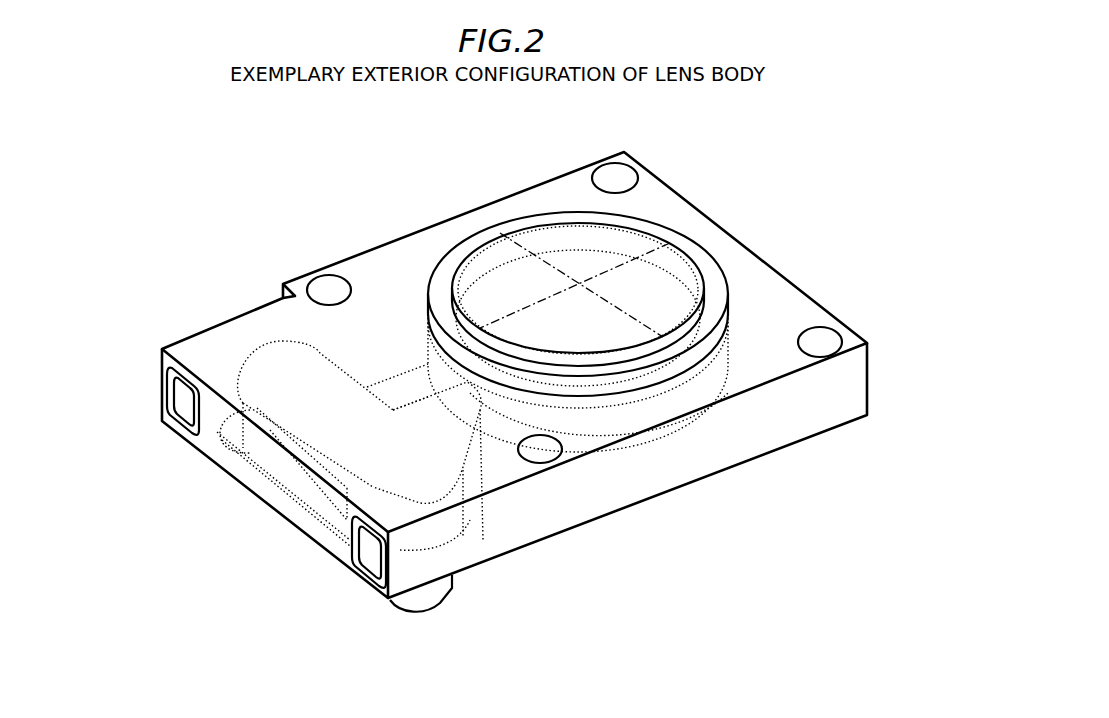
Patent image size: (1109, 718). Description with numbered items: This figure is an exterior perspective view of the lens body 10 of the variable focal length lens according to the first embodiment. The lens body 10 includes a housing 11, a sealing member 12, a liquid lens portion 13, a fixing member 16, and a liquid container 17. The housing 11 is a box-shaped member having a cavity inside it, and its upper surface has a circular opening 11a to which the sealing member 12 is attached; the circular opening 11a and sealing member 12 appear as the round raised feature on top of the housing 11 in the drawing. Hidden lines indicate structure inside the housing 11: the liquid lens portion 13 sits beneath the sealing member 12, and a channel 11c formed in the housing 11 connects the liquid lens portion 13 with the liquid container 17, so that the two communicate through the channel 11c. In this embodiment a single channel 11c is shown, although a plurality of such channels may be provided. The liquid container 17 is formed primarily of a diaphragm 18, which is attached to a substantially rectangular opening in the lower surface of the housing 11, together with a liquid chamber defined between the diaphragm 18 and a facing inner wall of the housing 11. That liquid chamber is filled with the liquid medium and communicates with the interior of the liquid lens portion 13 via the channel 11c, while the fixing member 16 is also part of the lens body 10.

The lens body 10 is at (514, 376).
The housing 11 is at (765, 297).
The circular opening 11a is at (457, 255).
The channel 11c is at (437, 423).
The sealing member 12 is at (608, 268).
The liquid lens portion 13 is at (714, 400).
The fixing member 16 is at (690, 443).
The liquid container 17 is at (270, 370).
The diaphragm 18 is at (447, 597).